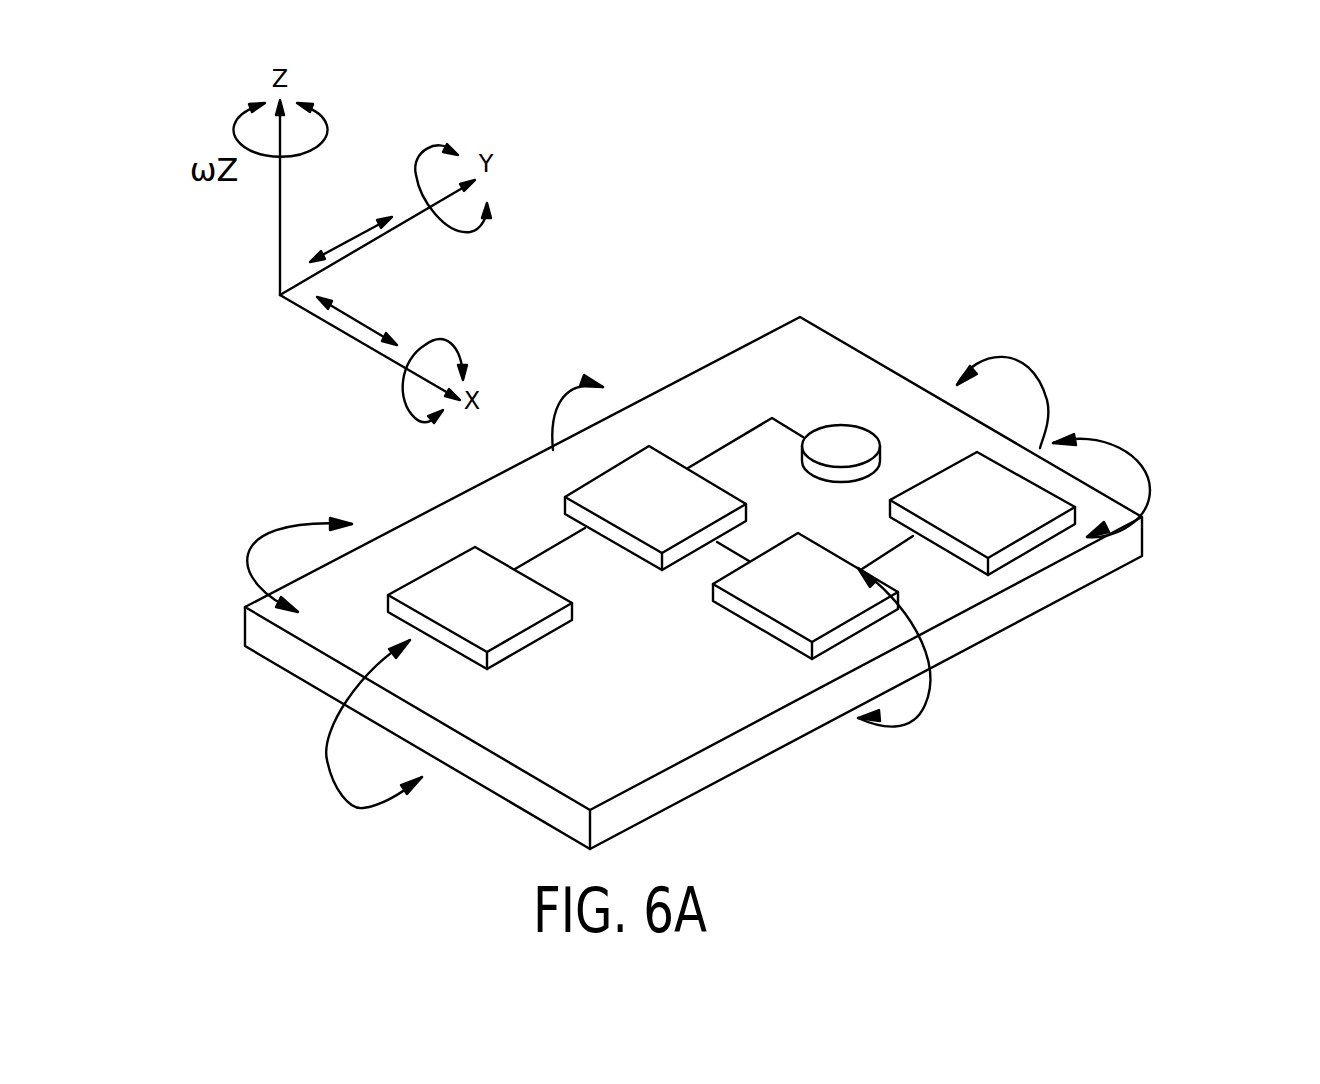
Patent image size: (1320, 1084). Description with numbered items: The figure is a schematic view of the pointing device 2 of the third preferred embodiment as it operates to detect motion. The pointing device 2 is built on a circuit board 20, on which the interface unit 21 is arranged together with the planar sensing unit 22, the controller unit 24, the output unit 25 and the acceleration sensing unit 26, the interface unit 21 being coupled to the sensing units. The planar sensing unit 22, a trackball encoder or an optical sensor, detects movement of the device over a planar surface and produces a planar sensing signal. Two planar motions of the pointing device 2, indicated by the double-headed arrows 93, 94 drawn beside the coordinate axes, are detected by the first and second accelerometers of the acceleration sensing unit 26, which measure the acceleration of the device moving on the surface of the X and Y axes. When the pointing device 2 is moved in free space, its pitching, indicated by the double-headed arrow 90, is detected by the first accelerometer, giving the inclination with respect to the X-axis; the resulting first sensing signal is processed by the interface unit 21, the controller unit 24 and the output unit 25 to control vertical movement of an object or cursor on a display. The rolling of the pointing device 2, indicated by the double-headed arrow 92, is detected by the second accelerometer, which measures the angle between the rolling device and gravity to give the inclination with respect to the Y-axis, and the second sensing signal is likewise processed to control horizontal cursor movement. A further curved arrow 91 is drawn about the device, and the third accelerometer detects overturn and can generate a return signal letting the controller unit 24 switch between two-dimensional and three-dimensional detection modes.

The pointing device 2 is at (752, 296).
The circuit board 20 is at (1093, 573).
The interface unit 21 is at (642, 463).
The planar sensing unit 22 is at (853, 442).
The controller unit 24 is at (782, 592).
The output unit 25 is at (963, 465).
The acceleration sensing unit 26 is at (520, 648).
The double-headed arrow indicating pitching 90 is at (1003, 360).
The second rotational motion 91 is at (253, 530).
The double-headed arrow indicating rolling 92 is at (932, 700).
The double-headed arrow indicating planar motion 93 is at (370, 230).
The double-headed arrow indicating planar motion 94 is at (358, 327).